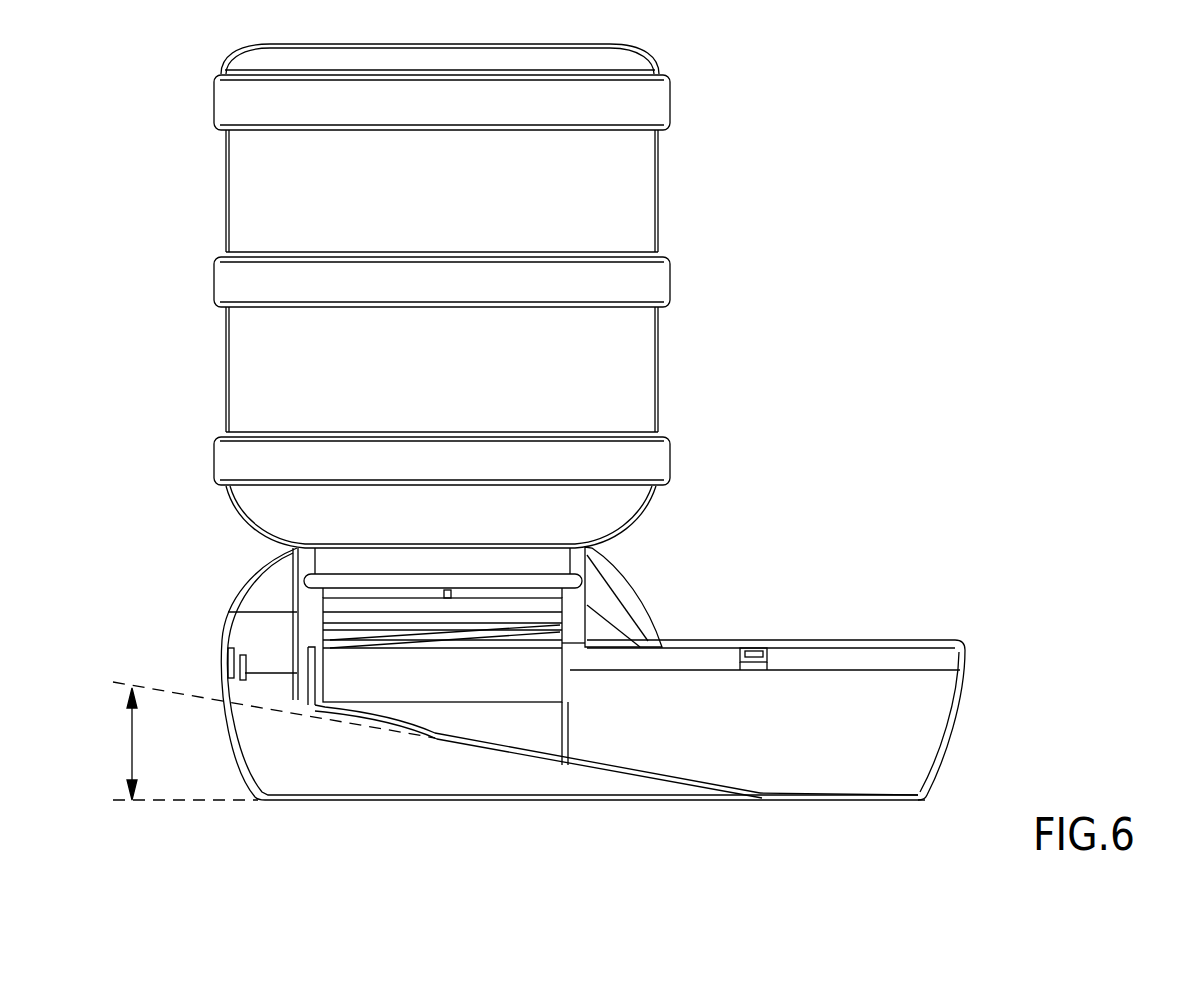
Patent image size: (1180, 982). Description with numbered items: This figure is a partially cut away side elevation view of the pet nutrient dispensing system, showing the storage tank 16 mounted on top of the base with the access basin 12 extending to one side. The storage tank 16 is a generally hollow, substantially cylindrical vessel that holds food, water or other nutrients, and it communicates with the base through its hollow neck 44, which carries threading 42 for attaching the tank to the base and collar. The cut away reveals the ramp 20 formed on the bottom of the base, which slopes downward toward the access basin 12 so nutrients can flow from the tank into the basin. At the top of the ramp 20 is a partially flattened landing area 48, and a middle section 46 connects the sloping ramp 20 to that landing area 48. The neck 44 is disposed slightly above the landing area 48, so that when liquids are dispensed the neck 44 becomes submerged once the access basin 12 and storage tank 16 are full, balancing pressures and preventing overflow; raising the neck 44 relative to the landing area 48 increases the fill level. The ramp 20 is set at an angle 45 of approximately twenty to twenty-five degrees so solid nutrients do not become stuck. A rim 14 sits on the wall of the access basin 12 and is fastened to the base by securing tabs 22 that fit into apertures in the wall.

The access basin 12 is at (963, 685).
The rim 14 is at (937, 645).
The storage tank 16 is at (663, 103).
The ramp 20 is at (707, 787).
The securing tabs 22 is at (753, 660).
The threading 42 is at (577, 580).
The neck 44 is at (553, 618).
The angle 45 is at (274, 741).
The middle section 46 is at (430, 734).
The landing area 48 is at (328, 708).